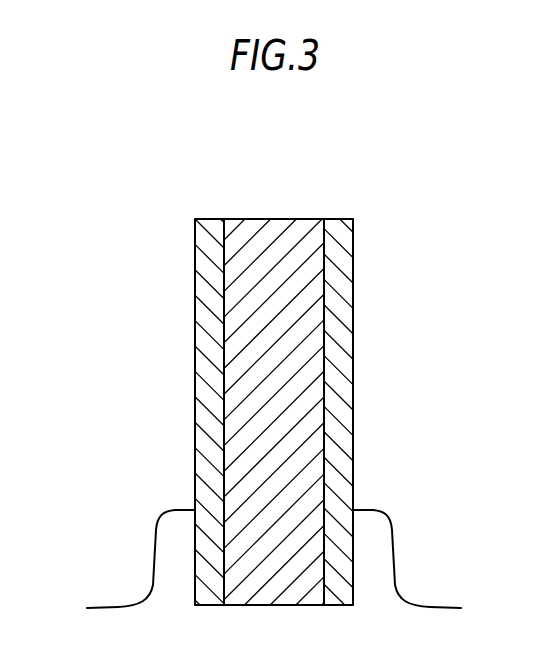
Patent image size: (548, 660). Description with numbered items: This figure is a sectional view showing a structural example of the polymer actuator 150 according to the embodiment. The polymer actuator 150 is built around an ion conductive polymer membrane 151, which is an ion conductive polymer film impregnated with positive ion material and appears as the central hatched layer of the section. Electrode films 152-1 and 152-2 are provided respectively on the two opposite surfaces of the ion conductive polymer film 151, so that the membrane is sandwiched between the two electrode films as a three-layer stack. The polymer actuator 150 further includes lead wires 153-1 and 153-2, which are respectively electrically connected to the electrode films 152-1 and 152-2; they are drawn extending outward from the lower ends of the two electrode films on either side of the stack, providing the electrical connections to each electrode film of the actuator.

The polymer actuator 150 is at (368, 213).
The ion conductive polymer membrane 151 is at (270, 270).
The electrode film 152-1 is at (208, 362).
The electrode film 152-2 is at (340, 362).
The lead wire 153-1 is at (152, 567).
The lead wire 153-2 is at (396, 567).